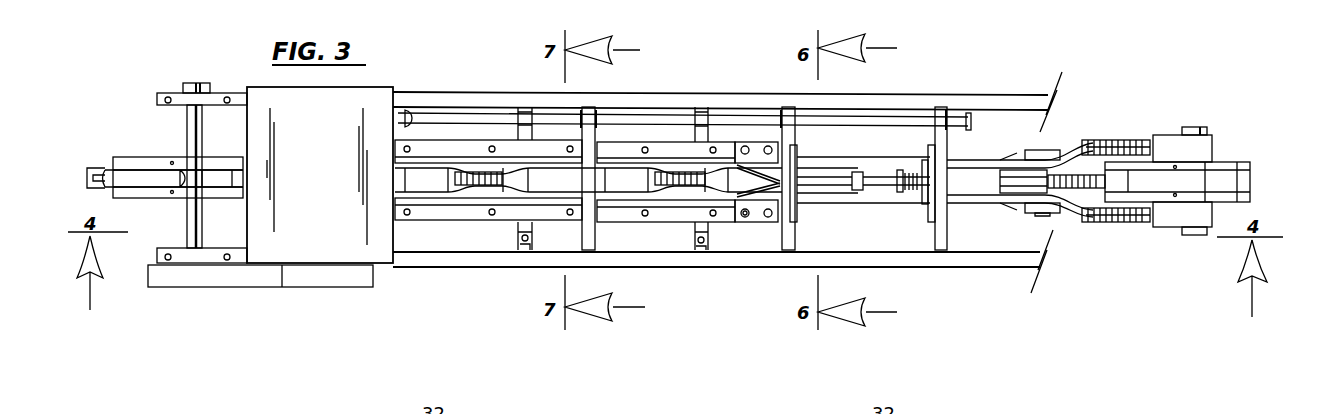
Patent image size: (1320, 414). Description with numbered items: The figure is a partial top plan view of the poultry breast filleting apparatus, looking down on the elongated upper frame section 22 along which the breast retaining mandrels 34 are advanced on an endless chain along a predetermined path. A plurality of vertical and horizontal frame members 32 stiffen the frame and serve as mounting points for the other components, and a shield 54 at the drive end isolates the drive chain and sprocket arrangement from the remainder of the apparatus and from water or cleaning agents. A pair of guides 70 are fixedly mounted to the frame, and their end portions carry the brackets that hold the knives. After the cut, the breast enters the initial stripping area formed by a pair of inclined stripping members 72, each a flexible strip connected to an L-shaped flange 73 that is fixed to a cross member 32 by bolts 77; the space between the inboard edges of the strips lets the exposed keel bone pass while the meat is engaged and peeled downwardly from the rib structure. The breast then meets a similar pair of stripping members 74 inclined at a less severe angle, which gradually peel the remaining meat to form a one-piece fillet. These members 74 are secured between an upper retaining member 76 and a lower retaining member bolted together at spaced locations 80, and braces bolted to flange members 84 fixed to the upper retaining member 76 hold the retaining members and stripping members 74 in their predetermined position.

The upper frame section 22 is at (935, 77).
The vertical and horizontal frame members 32 is at (797, 237).
The breast retaining mandrels 34 is at (163, 172).
The shield 54 is at (282, 287).
The guides 70 is at (978, 160).
The inclined stripping members 72 is at (756, 147).
The L-shaped flange 73 is at (758, 140).
The stripping members 74 is at (677, 166).
The upper retaining member 76 is at (622, 150).
The bolts 77 is at (746, 220).
The bolted locations 80 is at (645, 210).
The flange members 84 is at (520, 138).